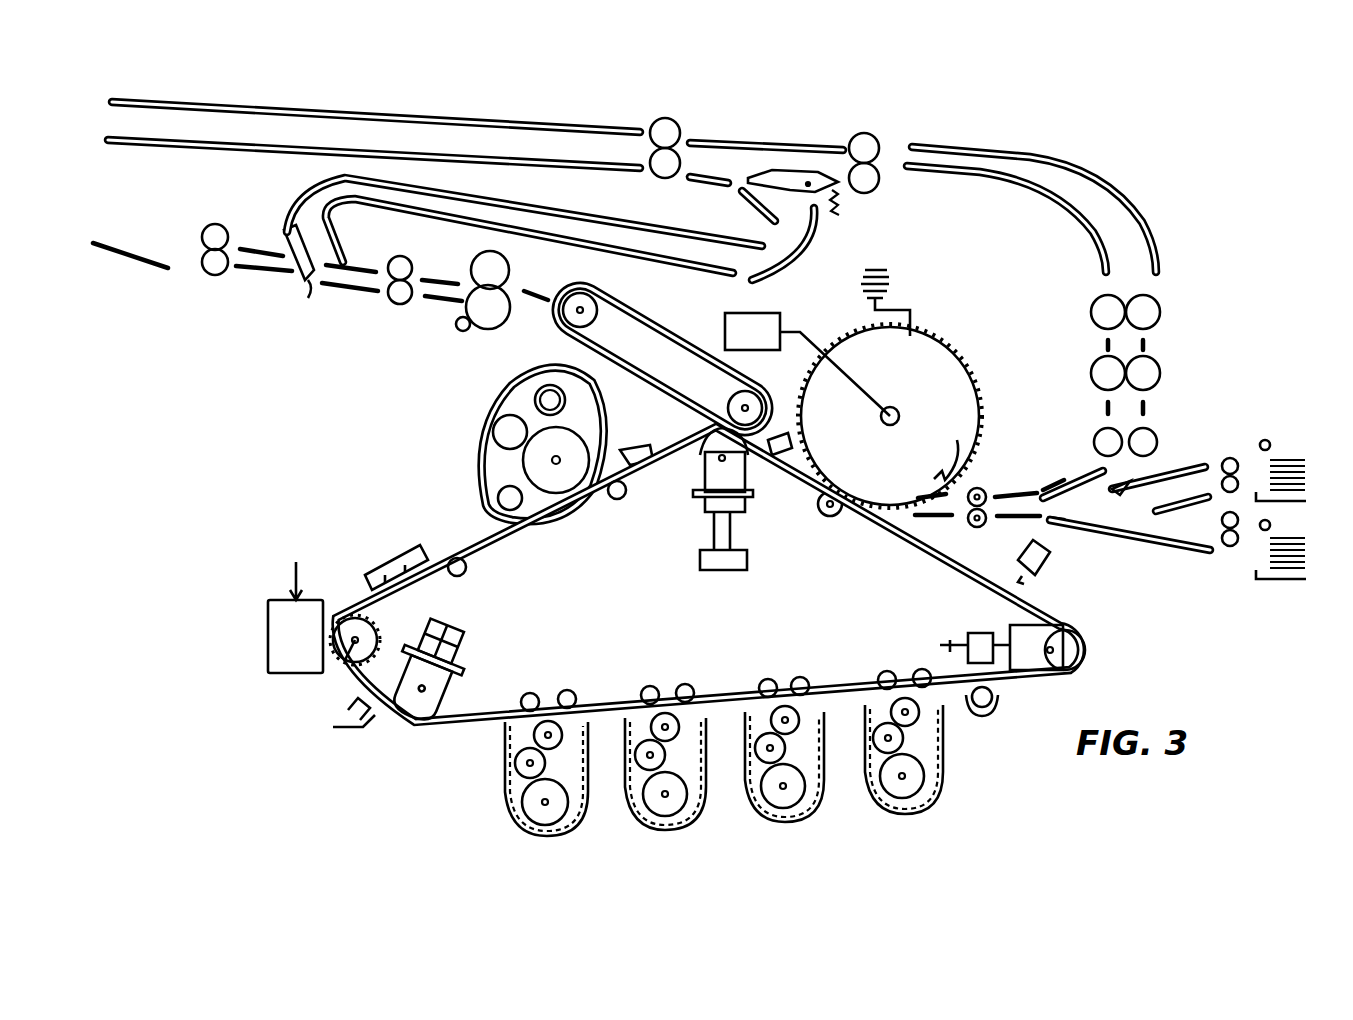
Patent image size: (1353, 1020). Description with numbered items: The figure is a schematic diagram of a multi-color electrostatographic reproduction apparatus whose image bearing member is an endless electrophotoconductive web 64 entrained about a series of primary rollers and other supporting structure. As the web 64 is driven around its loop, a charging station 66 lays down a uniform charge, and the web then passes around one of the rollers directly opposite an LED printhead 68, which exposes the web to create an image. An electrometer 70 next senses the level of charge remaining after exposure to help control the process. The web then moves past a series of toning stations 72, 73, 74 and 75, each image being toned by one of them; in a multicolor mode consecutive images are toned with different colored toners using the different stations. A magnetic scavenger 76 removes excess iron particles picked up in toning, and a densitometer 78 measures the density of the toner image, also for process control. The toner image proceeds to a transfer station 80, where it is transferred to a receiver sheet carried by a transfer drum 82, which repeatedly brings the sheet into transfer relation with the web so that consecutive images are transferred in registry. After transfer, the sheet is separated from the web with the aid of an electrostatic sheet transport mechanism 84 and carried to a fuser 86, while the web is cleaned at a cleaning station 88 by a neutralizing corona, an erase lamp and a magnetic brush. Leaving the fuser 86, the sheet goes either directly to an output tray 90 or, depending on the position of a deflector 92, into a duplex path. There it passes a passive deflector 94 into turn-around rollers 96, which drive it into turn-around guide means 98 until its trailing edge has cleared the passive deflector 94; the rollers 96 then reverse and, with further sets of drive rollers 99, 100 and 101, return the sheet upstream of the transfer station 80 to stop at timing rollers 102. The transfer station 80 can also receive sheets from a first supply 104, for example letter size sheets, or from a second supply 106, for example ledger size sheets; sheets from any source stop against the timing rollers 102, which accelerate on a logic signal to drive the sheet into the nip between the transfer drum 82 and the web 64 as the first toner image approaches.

The electrophotoconductive web 64 is at (478, 725).
The charging station 66 is at (390, 552).
The LED printhead 68 is at (270, 599).
The electrometer 70 is at (363, 728).
The toning station 72 is at (580, 800).
The toning station 73 is at (698, 800).
The toning station 74 is at (810, 798).
The toning station 75 is at (942, 780).
The magnetic scavenger 76 is at (988, 710).
The densitometer 78 is at (1048, 560).
The transfer station 80 is at (965, 481).
The transfer drum 82 is at (962, 402).
The electrostatic sheet transport mechanism 84 is at (682, 340).
The fuser 86 is at (513, 284).
The cleaning station 88 is at (625, 428).
The output tray 90 is at (143, 266).
The deflector 92 is at (293, 278).
The passive deflector 94 is at (792, 183).
The turn-around rollers 96 is at (667, 120).
The turn-around guide means 98 is at (439, 122).
The drive rollers 99 is at (874, 140).
The drive rollers 100 is at (1158, 312).
The drive rollers 101 is at (1145, 438).
The timing rollers 102 is at (979, 524).
The first supply 104 is at (1245, 457).
The second supply 106 is at (1254, 554).